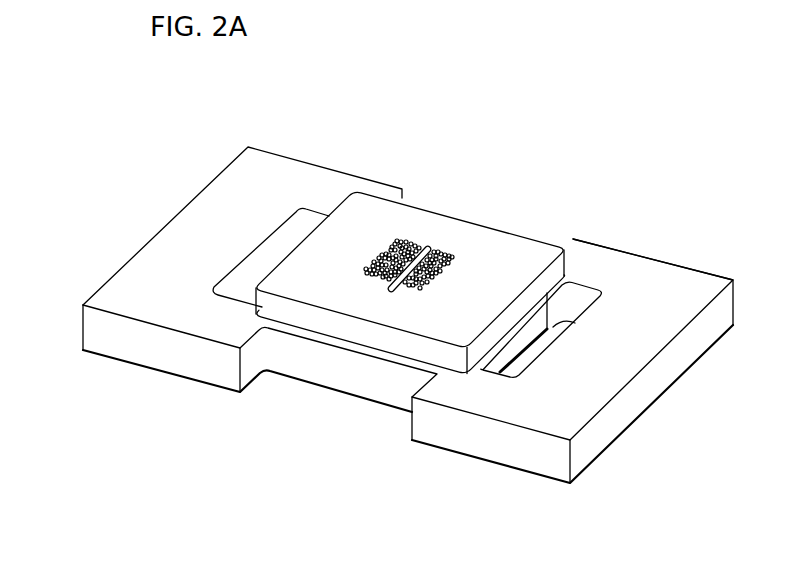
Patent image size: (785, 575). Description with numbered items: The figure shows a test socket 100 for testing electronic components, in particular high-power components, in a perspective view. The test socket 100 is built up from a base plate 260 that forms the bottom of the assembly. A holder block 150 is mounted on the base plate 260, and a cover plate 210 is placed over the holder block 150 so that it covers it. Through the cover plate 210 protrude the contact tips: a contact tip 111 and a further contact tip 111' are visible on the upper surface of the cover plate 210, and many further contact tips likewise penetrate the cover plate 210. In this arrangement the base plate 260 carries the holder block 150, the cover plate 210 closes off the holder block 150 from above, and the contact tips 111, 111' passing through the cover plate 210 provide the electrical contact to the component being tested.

The test socket 100 is at (135, 147).
The base plate 260 is at (227, 190).
The cover plate 210 is at (322, 248).
The contact tip 111 is at (426, 227).
The further contact tip 111' is at (420, 208).
The holder block 150 is at (535, 316).